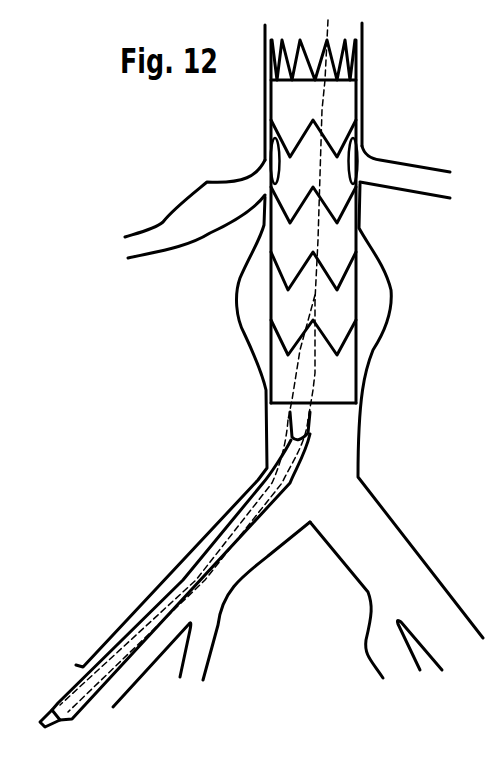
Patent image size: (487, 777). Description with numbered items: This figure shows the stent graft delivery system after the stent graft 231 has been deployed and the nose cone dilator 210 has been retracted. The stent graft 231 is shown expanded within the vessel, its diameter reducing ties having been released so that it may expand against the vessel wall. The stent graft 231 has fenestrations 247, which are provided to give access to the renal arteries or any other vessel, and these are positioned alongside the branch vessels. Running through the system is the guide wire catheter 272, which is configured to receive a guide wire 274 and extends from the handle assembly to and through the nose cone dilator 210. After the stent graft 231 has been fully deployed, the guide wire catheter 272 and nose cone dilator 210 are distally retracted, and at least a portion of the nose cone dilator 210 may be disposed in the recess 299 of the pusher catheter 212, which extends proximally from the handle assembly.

The guide wire 274 is at (325, 103).
The fenestrations 247 is at (358, 169).
The stent graft 231 is at (342, 241).
The nose cone dilator 210 is at (318, 369).
The recess 299 is at (313, 428).
The guide wire catheter 272 is at (287, 480).
The pusher catheter 212 is at (235, 528).